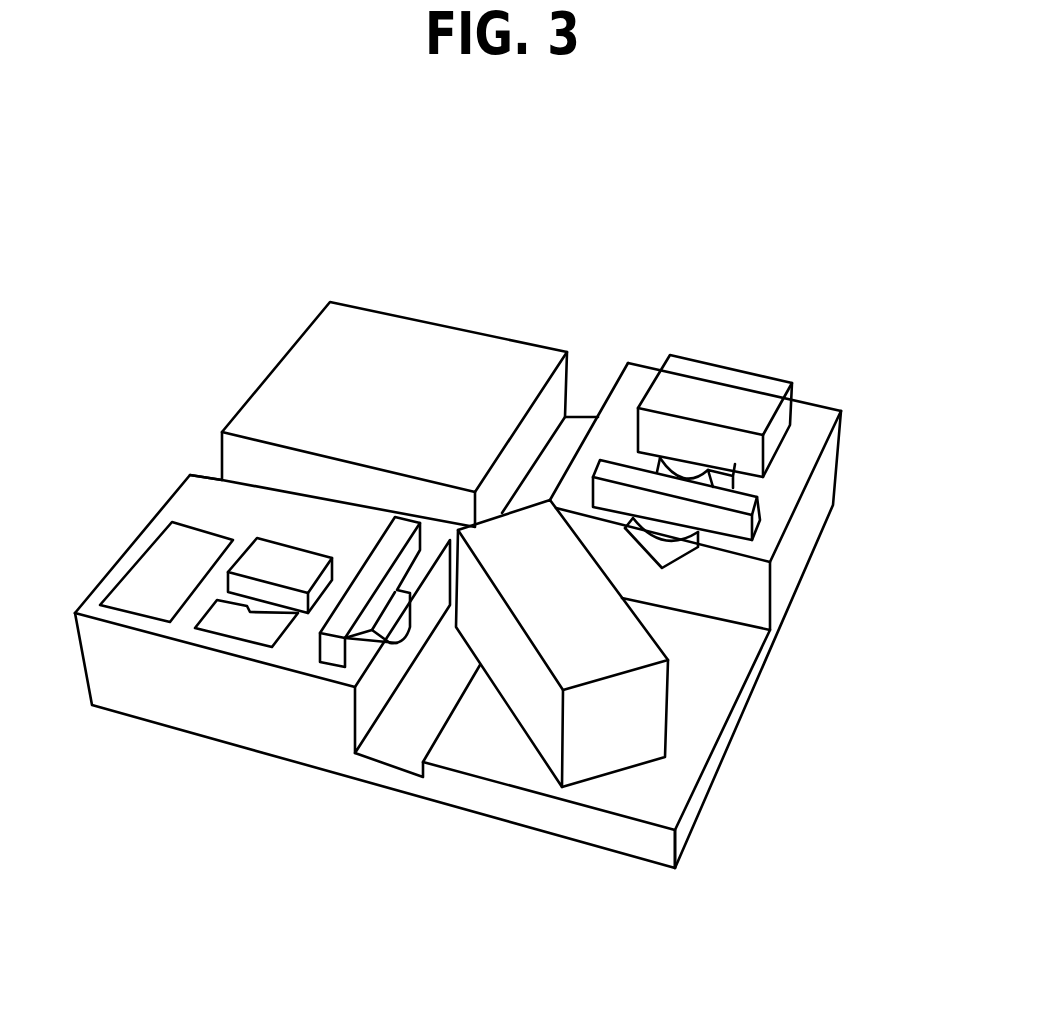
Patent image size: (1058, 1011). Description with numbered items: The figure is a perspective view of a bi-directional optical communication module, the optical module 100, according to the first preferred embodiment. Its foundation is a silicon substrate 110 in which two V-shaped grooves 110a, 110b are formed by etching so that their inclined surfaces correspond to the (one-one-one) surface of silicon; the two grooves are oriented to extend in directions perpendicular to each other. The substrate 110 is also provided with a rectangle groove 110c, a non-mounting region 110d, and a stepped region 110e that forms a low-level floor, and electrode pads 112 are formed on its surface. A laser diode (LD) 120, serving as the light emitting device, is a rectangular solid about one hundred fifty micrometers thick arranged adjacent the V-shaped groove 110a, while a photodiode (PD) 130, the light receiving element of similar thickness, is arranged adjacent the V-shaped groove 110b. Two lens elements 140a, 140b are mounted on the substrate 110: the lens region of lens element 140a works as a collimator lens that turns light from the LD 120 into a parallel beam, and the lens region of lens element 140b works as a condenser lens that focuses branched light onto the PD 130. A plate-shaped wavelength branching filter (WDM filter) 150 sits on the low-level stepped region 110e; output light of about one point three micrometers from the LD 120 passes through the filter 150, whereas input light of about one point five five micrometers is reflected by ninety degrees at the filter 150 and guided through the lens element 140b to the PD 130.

The optical module 100 is at (227, 193).
The substrate 110 is at (210, 728).
The V-shaped groove 110a is at (395, 640).
The V-shaped groove 110b is at (673, 538).
The rectangle groove 110c is at (218, 468).
The non-mounting region 110d is at (382, 307).
The stepped region 110e is at (633, 803).
The electrode pads 112 is at (235, 628).
The laser diode (LD) 120 is at (228, 580).
The photodiode (PD) 130 is at (728, 373).
The lens element 140a is at (327, 665).
The lens element 140b is at (760, 508).
The wavelength branching filter (WDM filter) 150 is at (658, 713).